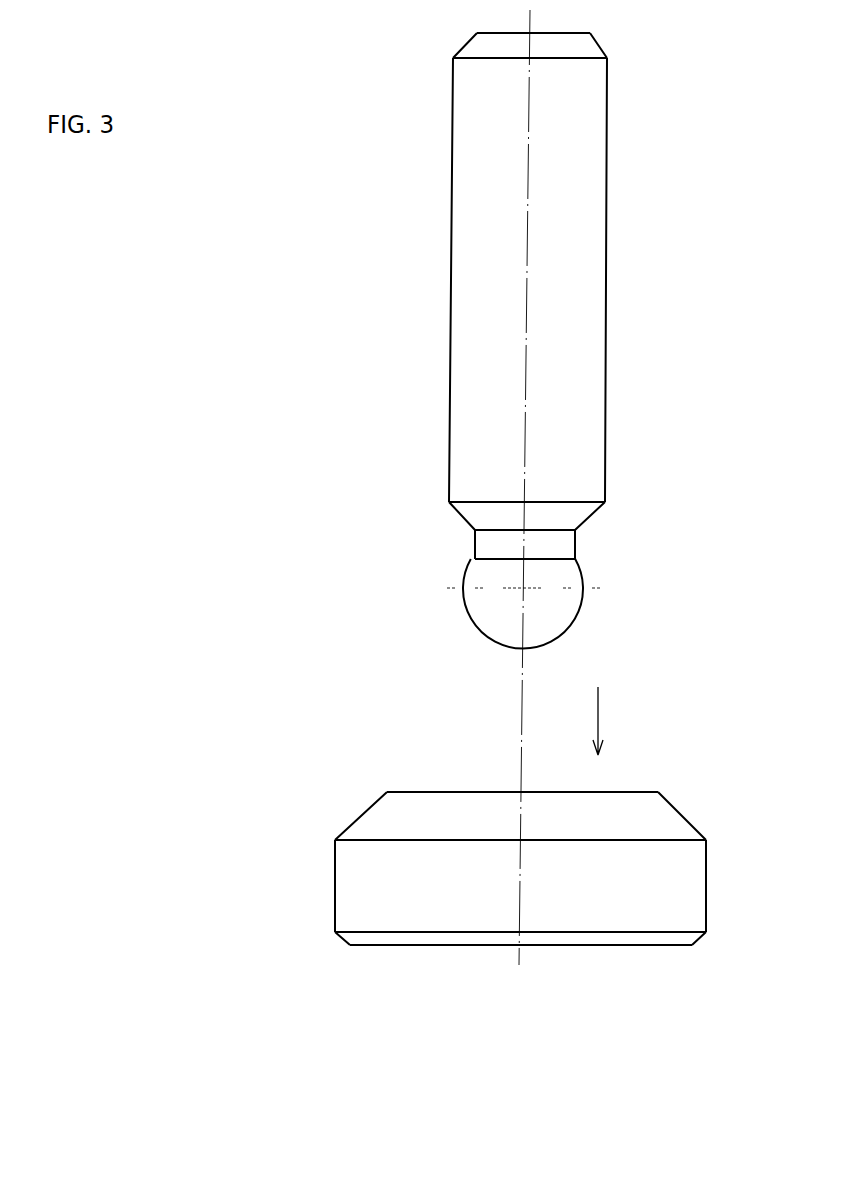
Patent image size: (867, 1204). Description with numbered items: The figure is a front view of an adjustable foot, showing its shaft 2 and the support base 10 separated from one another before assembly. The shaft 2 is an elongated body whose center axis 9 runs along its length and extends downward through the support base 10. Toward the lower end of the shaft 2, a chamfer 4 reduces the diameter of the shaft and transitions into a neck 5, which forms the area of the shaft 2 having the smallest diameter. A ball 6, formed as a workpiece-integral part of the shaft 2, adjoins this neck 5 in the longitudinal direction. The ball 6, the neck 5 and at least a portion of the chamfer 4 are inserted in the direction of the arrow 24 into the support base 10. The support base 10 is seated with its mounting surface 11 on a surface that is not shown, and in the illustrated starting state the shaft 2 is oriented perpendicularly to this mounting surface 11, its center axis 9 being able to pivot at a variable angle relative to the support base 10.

The shaft 2 is at (578, 189).
The center axis 9 is at (527, 313).
The chamfer 4 is at (593, 512).
The neck 5 is at (576, 540).
The ball 6 is at (575, 615).
The arrow 24 is at (601, 713).
The support base 10 is at (694, 828).
The mounting surface 11 is at (650, 948).